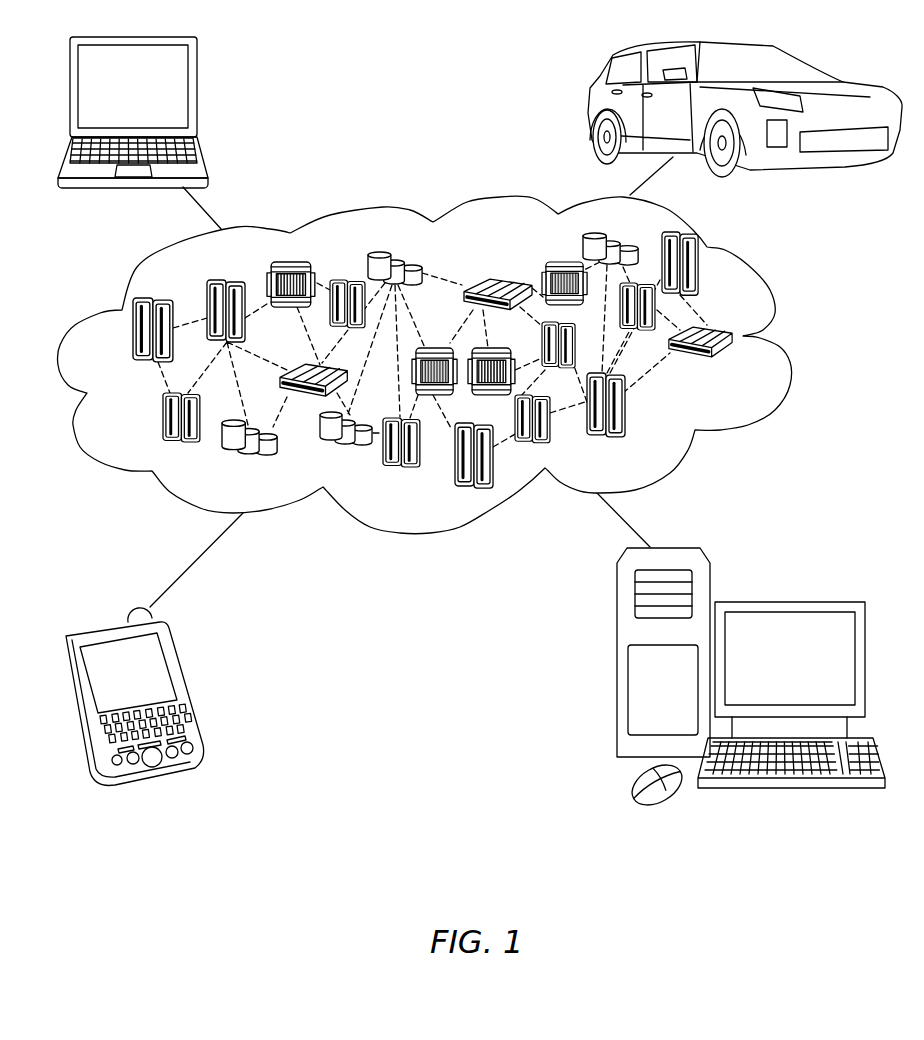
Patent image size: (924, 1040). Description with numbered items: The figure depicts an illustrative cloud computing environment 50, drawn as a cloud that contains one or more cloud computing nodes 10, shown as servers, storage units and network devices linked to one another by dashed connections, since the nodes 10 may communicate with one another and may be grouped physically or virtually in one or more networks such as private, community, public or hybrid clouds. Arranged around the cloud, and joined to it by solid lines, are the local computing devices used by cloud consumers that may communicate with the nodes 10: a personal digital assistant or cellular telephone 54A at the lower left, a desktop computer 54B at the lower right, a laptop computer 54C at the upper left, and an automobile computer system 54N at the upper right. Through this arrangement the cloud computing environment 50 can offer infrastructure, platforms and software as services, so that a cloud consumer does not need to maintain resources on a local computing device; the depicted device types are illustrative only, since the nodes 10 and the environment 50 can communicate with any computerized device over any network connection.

The cloud computing node 10 is at (735, 369).
The cloud computing environment 50 is at (790, 344).
The personal digital assistant (PDA) or cellular telephone 54A is at (187, 683).
The desktop computer 54B is at (788, 600).
The laptop computer 54C is at (197, 91).
The automobile computer system 54N is at (590, 108).